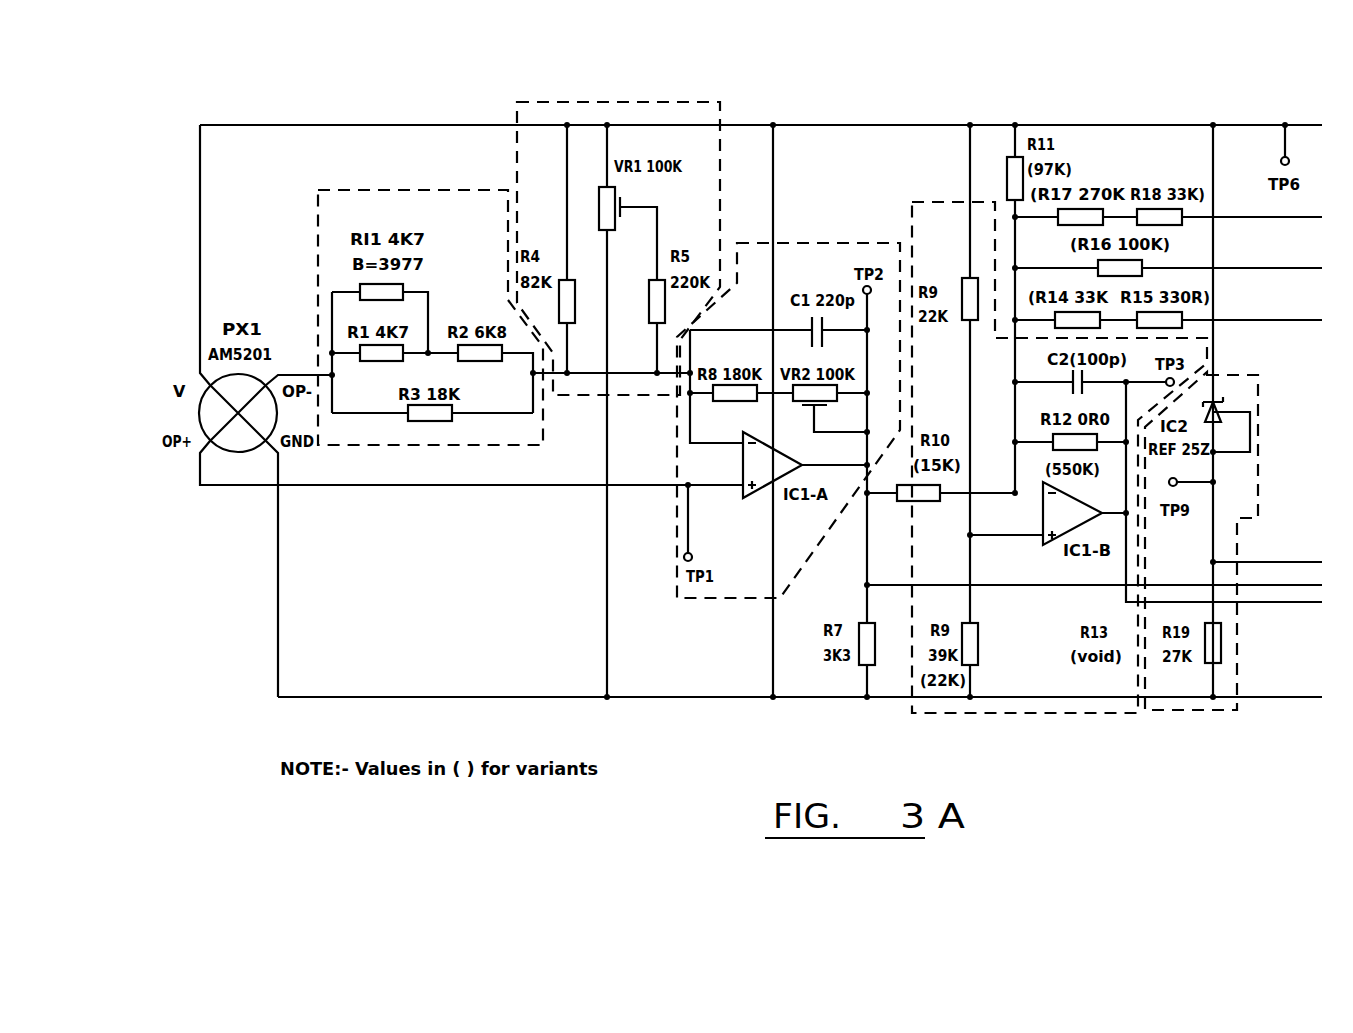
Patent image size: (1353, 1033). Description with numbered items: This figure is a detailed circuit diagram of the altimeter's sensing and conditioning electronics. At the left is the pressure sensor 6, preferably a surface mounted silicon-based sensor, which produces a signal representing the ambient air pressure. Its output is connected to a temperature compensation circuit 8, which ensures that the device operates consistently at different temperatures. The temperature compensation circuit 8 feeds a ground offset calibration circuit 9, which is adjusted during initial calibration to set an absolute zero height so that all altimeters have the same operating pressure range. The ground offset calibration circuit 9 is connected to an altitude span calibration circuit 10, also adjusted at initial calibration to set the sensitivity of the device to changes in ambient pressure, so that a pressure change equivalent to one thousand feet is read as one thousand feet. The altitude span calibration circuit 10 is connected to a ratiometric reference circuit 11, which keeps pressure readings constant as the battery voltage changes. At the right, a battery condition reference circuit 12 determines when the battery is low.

The pressure sensor 6 is at (232, 452).
The temperature compensation circuit 8 is at (318, 215).
The ground offset calibration circuit 9 is at (517, 102).
The altitude span calibration circuit 10 is at (838, 243).
The ratiometric reference circuit 11 is at (930, 202).
The battery condition reference circuit 12 is at (1207, 715).